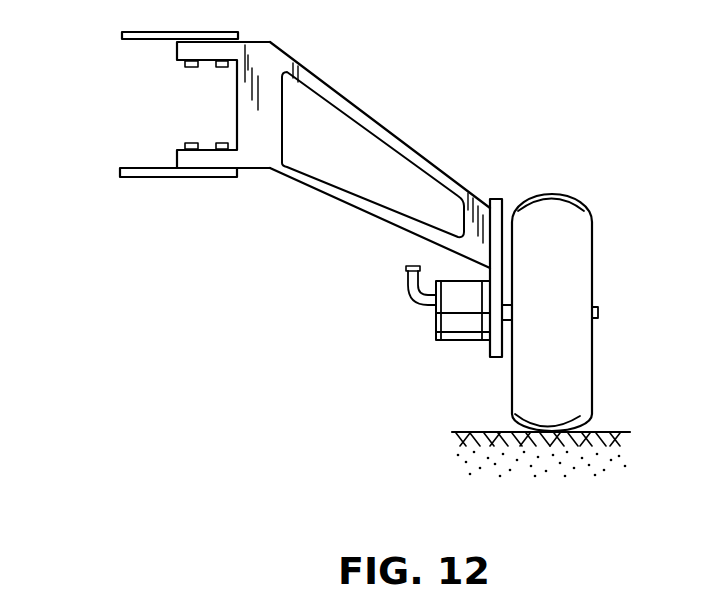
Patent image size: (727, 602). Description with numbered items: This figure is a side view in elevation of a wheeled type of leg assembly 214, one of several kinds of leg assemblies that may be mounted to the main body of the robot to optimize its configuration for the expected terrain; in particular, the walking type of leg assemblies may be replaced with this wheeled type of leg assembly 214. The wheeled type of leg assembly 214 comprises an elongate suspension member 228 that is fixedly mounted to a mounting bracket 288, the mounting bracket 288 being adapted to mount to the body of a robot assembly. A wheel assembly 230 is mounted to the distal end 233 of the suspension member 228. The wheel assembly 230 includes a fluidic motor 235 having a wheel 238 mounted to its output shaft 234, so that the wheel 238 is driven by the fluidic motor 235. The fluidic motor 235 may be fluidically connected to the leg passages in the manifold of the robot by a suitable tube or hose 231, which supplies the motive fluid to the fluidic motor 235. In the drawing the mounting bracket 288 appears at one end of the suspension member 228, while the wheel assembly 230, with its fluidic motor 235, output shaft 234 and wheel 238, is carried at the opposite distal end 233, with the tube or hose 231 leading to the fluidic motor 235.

The wheeled type of leg assembly 214 is at (399, 72).
The elongate suspension member 228 is at (412, 148).
The distal end 233 is at (476, 197).
The wheel 238 is at (592, 265).
The output shaft 234 is at (597, 319).
The tube or hose 231 is at (405, 282).
The wheel assembly 230 is at (433, 325).
The fluidic motor 235 is at (467, 347).
The mounting bracket 288 is at (150, 38).